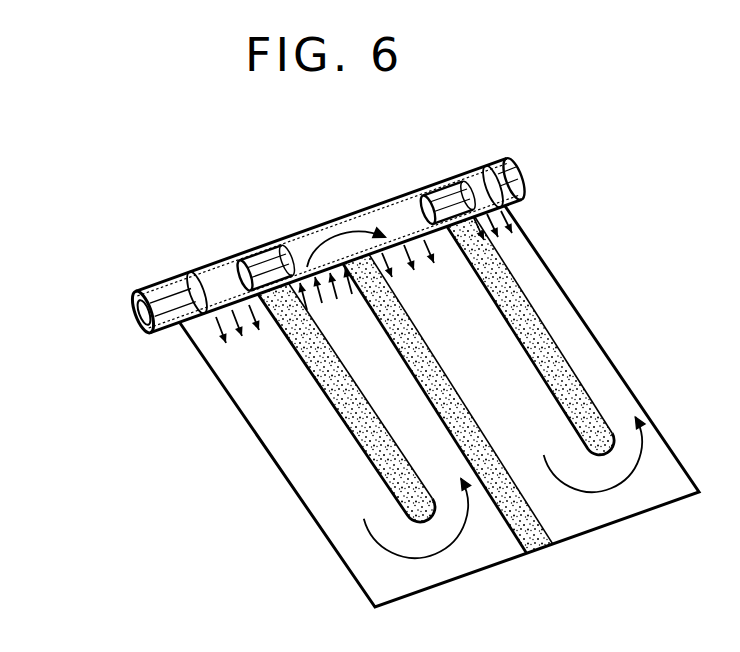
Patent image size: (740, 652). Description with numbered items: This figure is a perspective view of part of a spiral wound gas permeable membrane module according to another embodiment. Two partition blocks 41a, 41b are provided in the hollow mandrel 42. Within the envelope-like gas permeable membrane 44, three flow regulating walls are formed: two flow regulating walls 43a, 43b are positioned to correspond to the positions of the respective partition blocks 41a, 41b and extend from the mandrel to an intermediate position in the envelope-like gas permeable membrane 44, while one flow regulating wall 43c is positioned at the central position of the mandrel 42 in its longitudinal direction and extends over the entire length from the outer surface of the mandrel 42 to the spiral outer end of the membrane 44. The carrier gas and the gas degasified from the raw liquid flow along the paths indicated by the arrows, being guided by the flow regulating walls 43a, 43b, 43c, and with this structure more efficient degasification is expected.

The hollow mandrel 42 is at (172, 294).
The partition block 41a is at (263, 258).
The partition block 41b is at (447, 192).
The flow regulating wall 43a is at (367, 453).
The flow regulating wall 43b is at (560, 364).
The flow regulating wall 43c is at (522, 540).
The envelope-like gas permeable membrane 44 is at (272, 426).